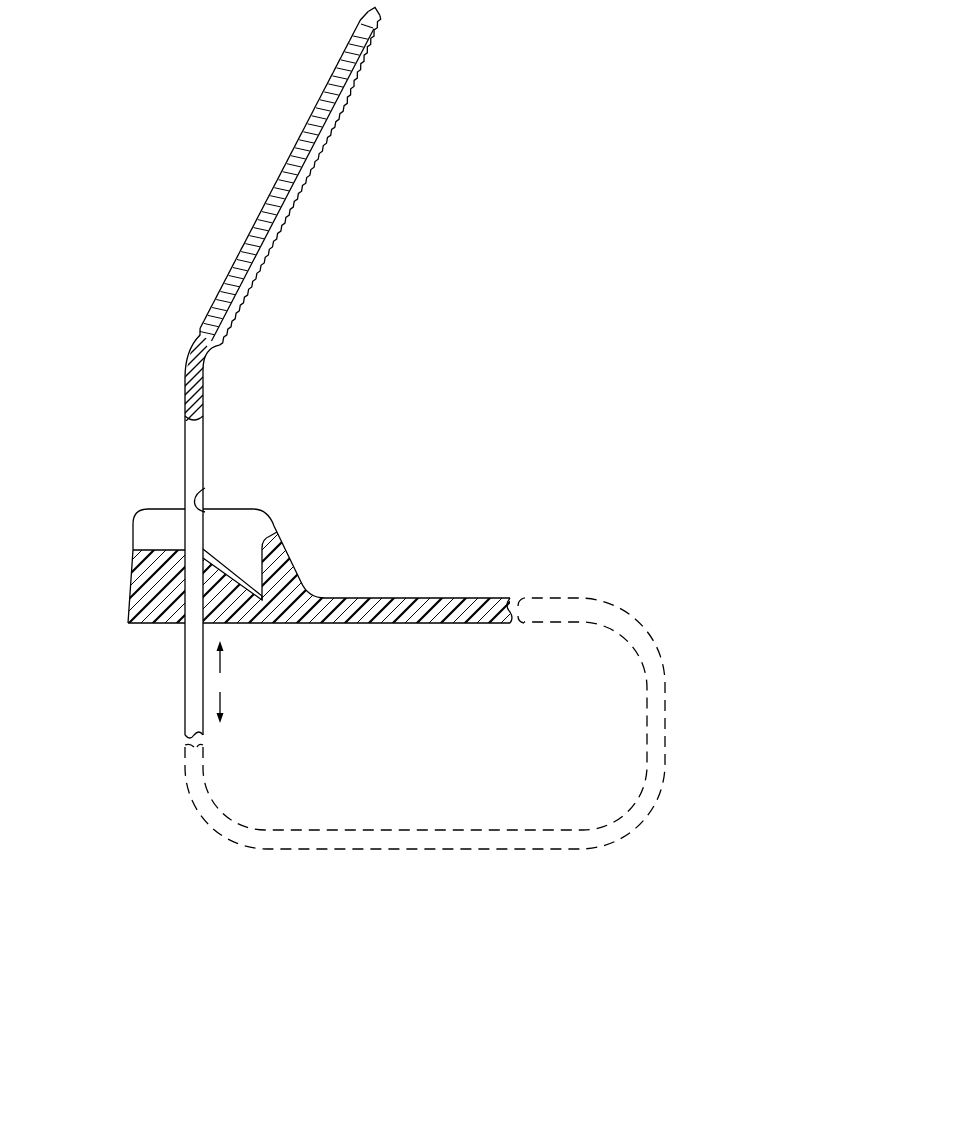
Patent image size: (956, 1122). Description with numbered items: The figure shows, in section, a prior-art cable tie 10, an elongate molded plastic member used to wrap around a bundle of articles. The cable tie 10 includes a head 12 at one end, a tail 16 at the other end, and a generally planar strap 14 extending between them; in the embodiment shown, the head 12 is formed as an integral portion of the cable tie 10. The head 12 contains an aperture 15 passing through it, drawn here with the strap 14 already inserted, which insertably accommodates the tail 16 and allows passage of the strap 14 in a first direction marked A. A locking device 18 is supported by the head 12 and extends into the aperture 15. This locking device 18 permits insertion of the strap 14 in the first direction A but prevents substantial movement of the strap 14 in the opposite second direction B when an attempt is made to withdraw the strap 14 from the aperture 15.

The cable tie 10 is at (270, 430).
The head 12 is at (282, 553).
The strap 14 is at (442, 598).
The aperture 15 is at (203, 487).
The tail 16 is at (382, 7).
The locking device 18 is at (224, 555).